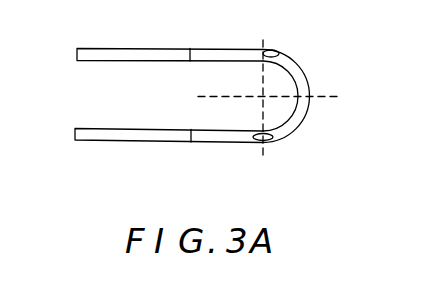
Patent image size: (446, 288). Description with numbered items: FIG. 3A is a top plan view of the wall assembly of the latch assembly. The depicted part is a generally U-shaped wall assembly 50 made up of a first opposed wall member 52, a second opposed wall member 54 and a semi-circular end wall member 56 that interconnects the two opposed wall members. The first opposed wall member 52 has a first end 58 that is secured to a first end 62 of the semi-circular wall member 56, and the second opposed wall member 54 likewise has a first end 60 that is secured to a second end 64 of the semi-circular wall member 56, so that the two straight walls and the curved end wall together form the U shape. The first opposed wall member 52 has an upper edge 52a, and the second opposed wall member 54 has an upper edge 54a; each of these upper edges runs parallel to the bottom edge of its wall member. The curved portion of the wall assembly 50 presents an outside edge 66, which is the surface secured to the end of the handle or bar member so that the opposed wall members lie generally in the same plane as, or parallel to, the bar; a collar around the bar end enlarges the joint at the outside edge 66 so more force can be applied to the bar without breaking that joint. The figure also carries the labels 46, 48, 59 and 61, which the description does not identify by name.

The lower leg 46 is at (142, 140).
The upper leg 48 is at (163, 60).
The U-shaped wall assembly 50 is at (296, 132).
The first opposed wall member 52 is at (180, 139).
The upper edge 52a is at (218, 142).
The second opposed wall member 54 is at (183, 62).
The upper edge 54a is at (230, 60).
The semi-circular end wall member 56 is at (303, 88).
The first end 58 is at (260, 135).
The lower leg free end 59 is at (67, 145).
The first end 60 is at (263, 53).
The upper leg free end 61 is at (78, 51).
The first end 62 is at (273, 140).
The second end 64 is at (278, 55).
The outside edge 66 is at (306, 113).